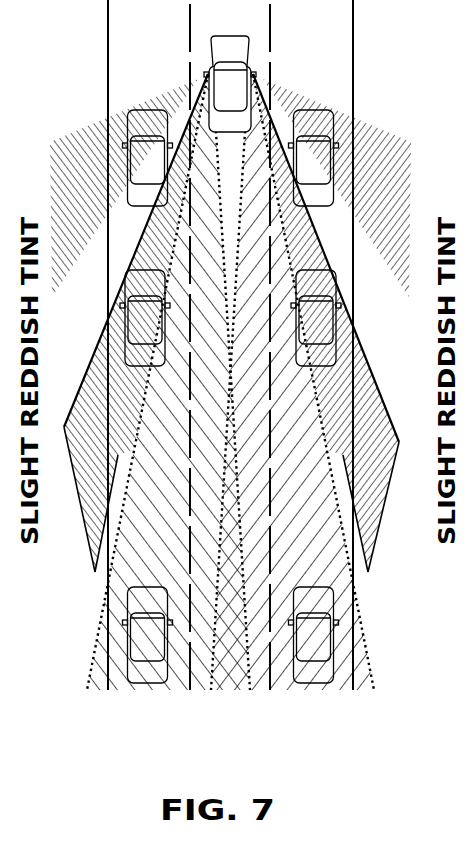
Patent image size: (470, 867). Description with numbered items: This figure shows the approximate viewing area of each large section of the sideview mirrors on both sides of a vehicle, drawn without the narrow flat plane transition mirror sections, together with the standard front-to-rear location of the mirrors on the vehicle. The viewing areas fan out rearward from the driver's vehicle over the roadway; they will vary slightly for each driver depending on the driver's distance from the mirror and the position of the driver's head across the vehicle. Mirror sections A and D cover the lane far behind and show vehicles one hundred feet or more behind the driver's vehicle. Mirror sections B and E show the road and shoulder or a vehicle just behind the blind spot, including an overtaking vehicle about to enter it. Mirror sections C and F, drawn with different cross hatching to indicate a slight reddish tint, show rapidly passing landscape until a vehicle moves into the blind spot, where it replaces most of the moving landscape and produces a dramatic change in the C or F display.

The mirror section A is at (168, 382).
The mirror section B is at (26, 548).
The mirror section C is at (24, 214).
The mirror section D is at (292, 382).
The mirror section E is at (445, 538).
The mirror section F is at (440, 214).